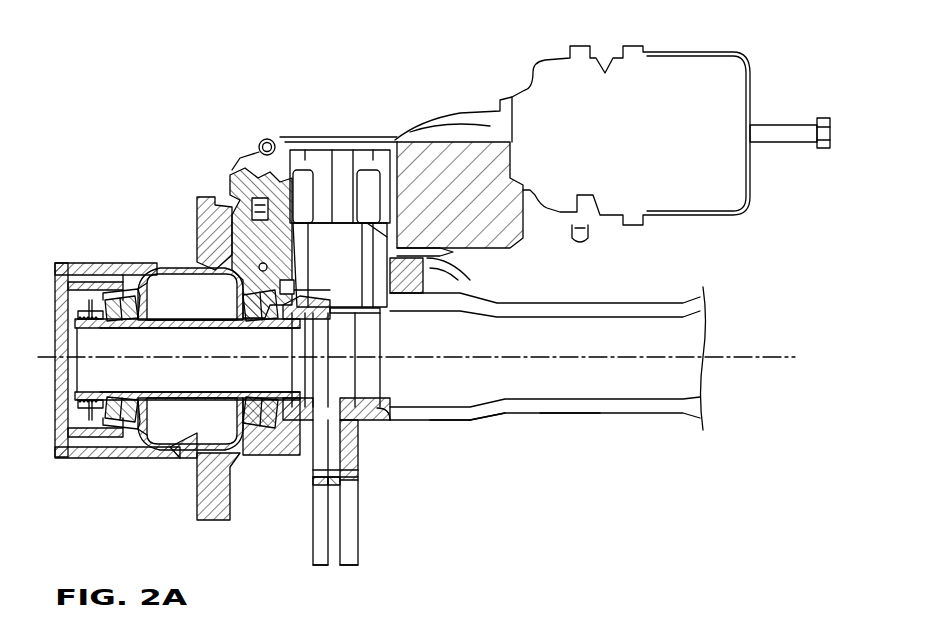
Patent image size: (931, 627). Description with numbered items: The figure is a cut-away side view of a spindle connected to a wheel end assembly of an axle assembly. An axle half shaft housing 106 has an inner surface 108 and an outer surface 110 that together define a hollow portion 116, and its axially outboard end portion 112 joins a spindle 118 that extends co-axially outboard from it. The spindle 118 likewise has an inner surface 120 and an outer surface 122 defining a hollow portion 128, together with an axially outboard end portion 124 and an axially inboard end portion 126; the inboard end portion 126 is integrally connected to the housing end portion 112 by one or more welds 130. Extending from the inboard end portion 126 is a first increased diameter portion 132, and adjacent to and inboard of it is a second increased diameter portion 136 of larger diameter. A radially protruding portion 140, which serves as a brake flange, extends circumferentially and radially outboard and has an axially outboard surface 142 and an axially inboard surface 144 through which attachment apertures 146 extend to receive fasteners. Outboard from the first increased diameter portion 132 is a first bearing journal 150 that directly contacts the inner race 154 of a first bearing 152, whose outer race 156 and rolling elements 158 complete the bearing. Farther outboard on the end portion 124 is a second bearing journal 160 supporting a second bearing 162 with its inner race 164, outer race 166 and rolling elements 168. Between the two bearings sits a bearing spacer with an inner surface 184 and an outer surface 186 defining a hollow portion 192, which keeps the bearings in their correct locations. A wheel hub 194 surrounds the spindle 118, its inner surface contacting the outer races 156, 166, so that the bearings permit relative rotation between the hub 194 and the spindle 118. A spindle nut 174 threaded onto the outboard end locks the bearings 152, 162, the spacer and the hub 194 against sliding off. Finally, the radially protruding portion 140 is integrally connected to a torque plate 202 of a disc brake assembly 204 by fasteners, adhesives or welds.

The axle half shaft housing 106 is at (538, 300).
The inner surface 108 is at (443, 406).
The outer surface 110 is at (483, 415).
The axially outboard end portion 112 is at (438, 421).
The hollow portion 116 is at (568, 383).
The spindle 118 is at (215, 328).
The inner surface 120 is at (174, 396).
The outer surface 122 is at (173, 401).
The axially outboard end portion 124 is at (106, 394).
The axially inboard end portion 126 is at (343, 403).
The hollow portion 128 is at (105, 343).
The weld 130 is at (383, 415).
The first increased diameter portion 132 is at (284, 402).
The second increased diameter portion 136 is at (338, 400).
The radially protruding portion 140 is at (350, 490).
The axially outboard surface 142 is at (337, 483).
The axially inboard surface 144 is at (348, 488).
The attachment aperture 146 is at (358, 477).
The first bearing journal 150 is at (248, 320).
The first bearing 152 is at (313, 320).
The inner race 154 is at (277, 318).
The outer race 156 is at (263, 267).
The rolling elements 158 is at (288, 287).
The second bearing journal 160 is at (112, 319).
The second bearing 162 is at (118, 428).
The inner race 164 is at (133, 320).
The outer race 166 is at (130, 294).
The rolling elements 168 is at (135, 300).
The spindle nut 174 is at (80, 404).
The inner surface 184 is at (195, 322).
The outer surface 186 is at (193, 420).
The hollow portion 192 is at (230, 437).
The wheel hub 194 is at (165, 462).
The torque plate 202 is at (350, 562).
The disc brake assembly 204 is at (442, 98).